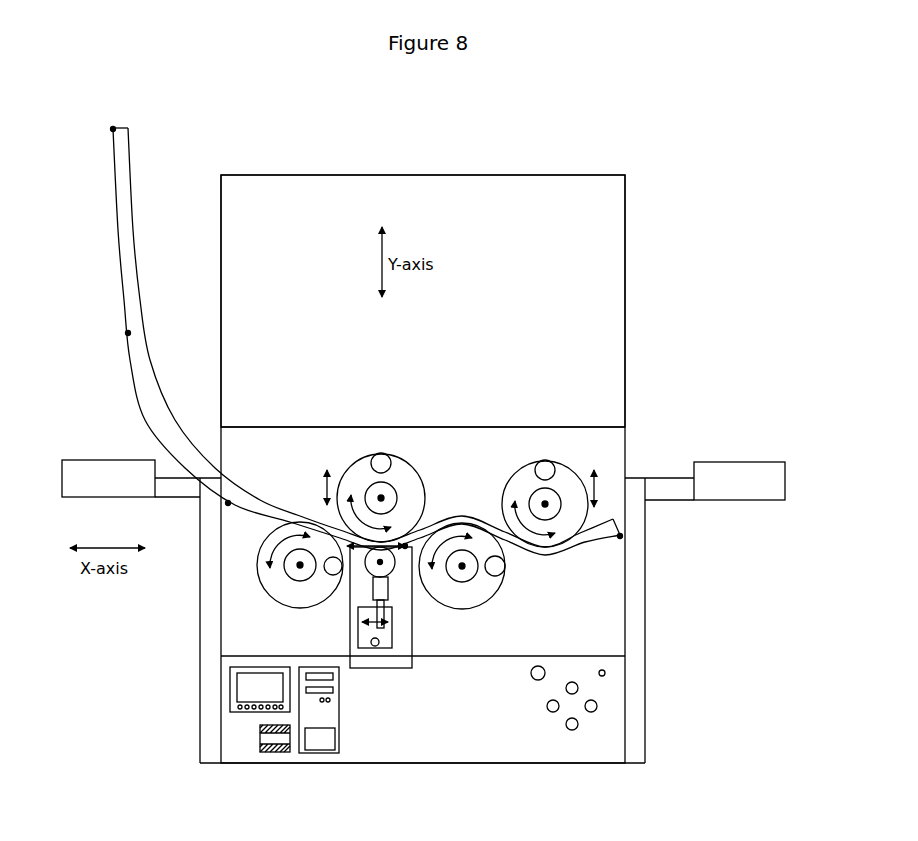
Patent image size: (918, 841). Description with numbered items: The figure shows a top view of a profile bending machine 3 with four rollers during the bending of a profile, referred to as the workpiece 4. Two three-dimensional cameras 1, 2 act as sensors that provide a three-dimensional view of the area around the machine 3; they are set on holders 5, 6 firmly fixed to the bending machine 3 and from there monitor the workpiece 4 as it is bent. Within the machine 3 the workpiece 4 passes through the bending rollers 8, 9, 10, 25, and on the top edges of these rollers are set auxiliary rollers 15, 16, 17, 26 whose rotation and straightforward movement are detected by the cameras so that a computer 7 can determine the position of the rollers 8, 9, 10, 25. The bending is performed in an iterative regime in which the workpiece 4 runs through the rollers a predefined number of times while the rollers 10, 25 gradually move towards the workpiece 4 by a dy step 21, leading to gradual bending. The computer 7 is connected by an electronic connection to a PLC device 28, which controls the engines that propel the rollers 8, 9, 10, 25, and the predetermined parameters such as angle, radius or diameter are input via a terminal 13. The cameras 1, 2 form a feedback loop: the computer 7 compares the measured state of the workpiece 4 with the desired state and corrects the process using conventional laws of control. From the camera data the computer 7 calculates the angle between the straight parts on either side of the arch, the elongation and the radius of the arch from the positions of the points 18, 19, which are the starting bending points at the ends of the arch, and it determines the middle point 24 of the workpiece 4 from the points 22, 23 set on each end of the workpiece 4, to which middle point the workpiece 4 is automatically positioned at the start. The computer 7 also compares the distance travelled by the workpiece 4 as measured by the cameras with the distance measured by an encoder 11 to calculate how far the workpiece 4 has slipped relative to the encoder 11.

The 3D camera 1 is at (70, 480).
The 3D camera 2 is at (773, 480).
The bending machine 3 is at (602, 282).
The workpiece 4 is at (153, 377).
The holder 5 is at (205, 740).
The holder 6 is at (633, 740).
The computer 7 is at (332, 755).
The roller 8 is at (285, 588).
The roller 9 is at (452, 590).
The roller 10 is at (410, 470).
The encoder 11 is at (390, 582).
The terminal 13 is at (262, 693).
The auxiliary roller 15 is at (330, 580).
The auxiliary roller 16 is at (493, 578).
The auxiliary roller 17 is at (386, 455).
The point 18 is at (128, 333).
The point 19 is at (405, 546).
The dy step 21 is at (318, 472).
The point 22 is at (113, 129).
The point 23 is at (620, 537).
The middle point 24 is at (228, 503).
The roller 25 is at (570, 485).
The auxiliary roller 26 is at (552, 462).
The PLC device 28 is at (277, 755).